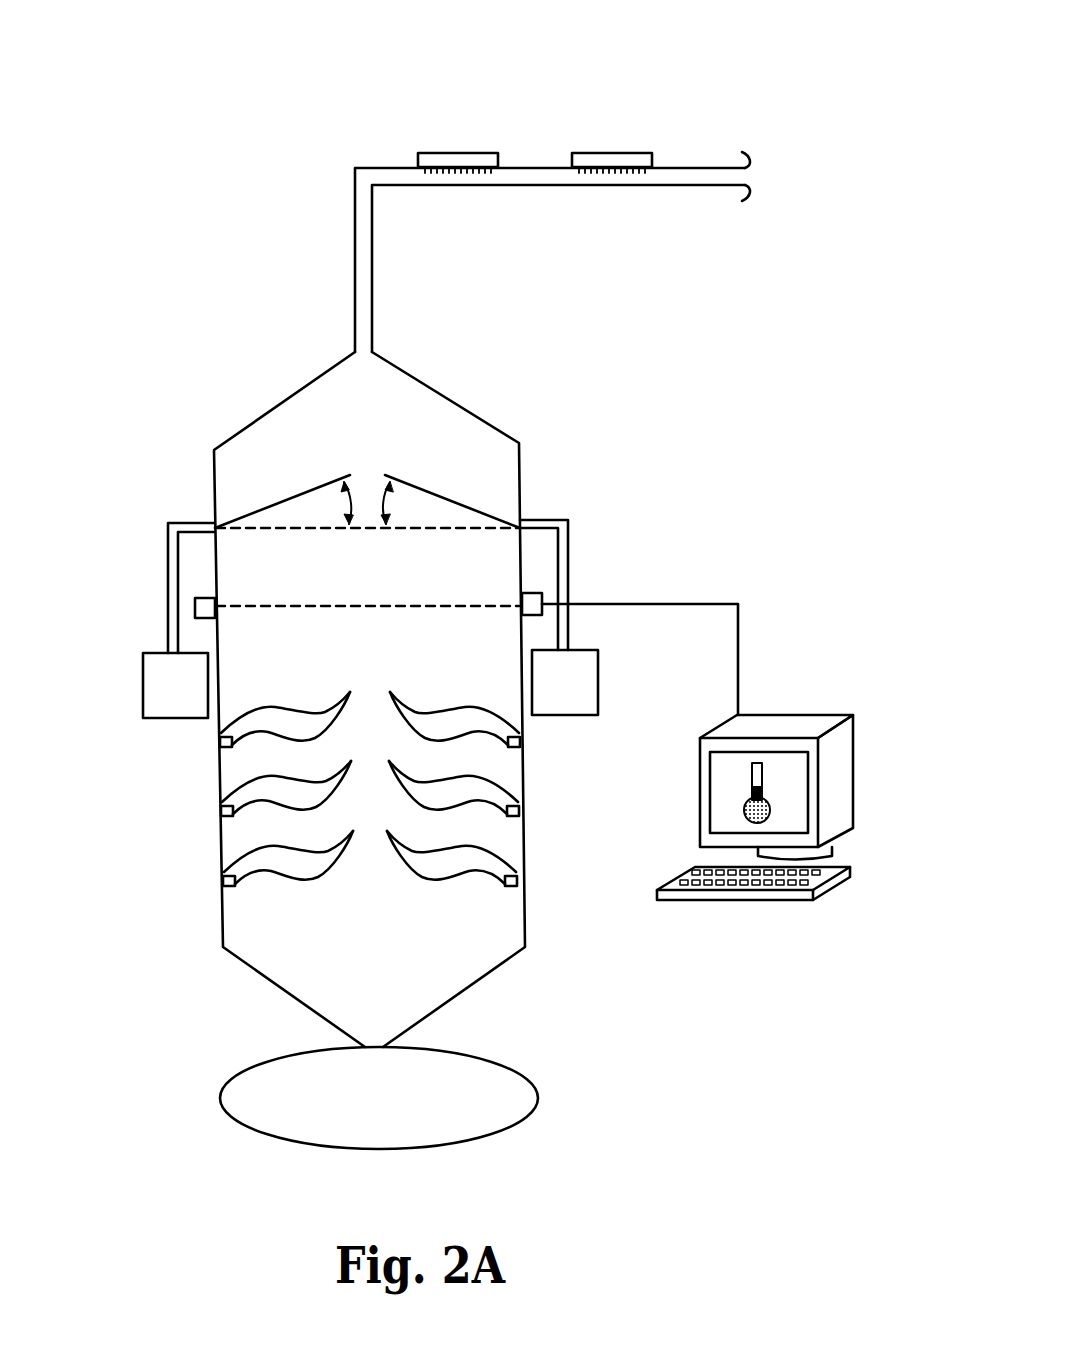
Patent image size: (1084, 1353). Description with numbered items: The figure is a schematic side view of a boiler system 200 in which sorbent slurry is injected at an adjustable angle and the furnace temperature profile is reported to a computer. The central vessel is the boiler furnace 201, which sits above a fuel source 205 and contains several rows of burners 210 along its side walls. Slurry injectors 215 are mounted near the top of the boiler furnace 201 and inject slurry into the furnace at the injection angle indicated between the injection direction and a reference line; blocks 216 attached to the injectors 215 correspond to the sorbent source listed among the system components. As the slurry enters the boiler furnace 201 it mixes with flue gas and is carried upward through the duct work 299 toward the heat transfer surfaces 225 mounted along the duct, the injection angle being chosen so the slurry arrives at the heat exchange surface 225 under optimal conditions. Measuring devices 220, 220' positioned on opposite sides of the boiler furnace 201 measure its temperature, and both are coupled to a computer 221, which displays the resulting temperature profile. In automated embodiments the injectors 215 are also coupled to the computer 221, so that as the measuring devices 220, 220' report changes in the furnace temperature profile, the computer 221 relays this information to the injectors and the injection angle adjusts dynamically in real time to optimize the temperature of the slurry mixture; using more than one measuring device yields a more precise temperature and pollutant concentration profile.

The boiler system 200 is at (163, 90).
The boiler furnace 201 is at (383, 447).
The fuel source 205 is at (393, 1107).
The burners 210 is at (208, 880).
The slurry injectors 215 is at (185, 522).
The sensor units 216 is at (143, 685).
The measuring device 220 is at (165, 580).
The measuring device 220' is at (578, 575).
The computer 221 is at (837, 785).
The heat transfer surfaces 225 is at (452, 152).
The duct work 299 is at (355, 258).